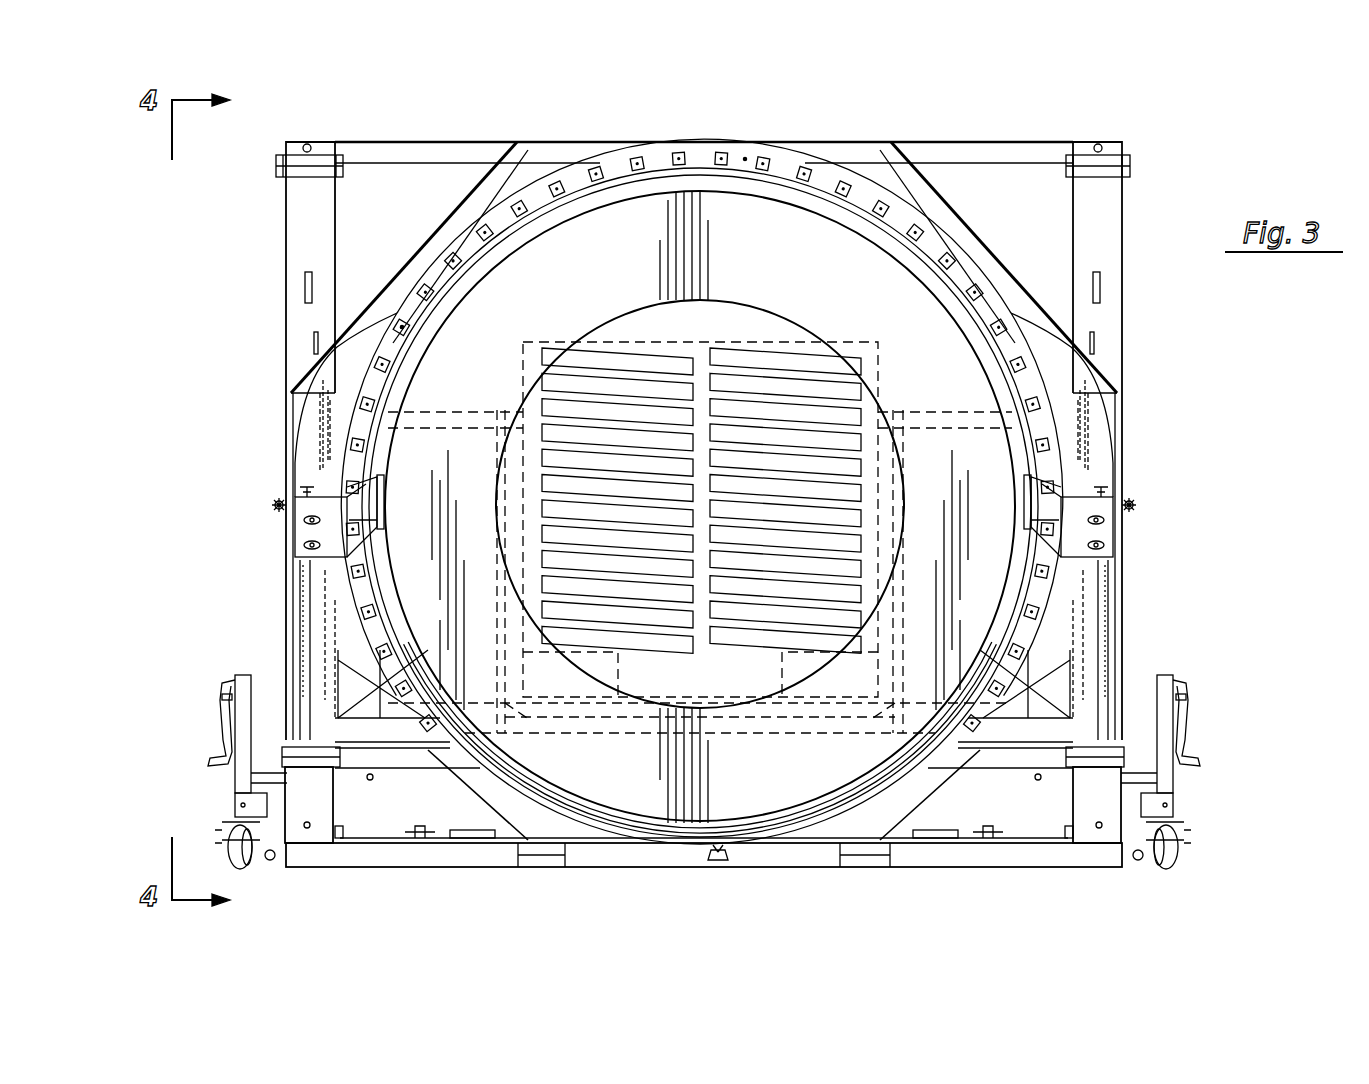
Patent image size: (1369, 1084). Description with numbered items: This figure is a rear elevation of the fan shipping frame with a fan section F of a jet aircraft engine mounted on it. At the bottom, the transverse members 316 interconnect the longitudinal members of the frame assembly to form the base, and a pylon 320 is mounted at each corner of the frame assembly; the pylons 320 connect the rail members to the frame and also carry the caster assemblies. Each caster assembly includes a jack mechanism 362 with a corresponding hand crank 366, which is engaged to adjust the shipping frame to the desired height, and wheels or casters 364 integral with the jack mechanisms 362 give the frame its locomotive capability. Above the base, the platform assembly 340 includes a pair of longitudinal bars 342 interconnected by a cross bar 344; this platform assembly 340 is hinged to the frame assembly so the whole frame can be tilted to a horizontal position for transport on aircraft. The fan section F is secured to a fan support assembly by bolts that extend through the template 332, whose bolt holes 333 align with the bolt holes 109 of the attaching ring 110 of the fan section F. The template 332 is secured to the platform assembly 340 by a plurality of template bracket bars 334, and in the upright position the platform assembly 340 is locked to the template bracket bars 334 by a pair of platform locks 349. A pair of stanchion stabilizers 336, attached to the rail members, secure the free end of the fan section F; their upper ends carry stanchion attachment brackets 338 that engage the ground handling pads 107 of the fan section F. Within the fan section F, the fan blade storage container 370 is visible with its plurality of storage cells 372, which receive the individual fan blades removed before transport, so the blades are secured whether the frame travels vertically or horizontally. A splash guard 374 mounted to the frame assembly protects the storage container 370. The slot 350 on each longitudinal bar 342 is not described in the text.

The ground handling pads 107 is at (375, 490).
The bolt holes 109 is at (700, 412).
The attaching ring 110 is at (760, 168).
The transverse members 316 is at (596, 855).
The pylon 320 is at (300, 158).
The template 332 is at (838, 175).
The bolt holes 333 is at (830, 180).
The template bracket bars 334 is at (580, 155).
The stanchion stabilizers 336 is at (315, 595).
The stanchion attachment brackets 338 is at (380, 505).
The platform assembly 340 is at (440, 130).
The longitudinal bars 342 is at (303, 353).
The cross bar 344 is at (487, 150).
The platform locks 349 is at (280, 505).
The slot 350 is at (305, 290).
The jack mechanism 362 is at (235, 765).
The casters 364 is at (245, 860).
The hand crank 366 is at (203, 748).
The fan blade storage container 370 is at (720, 694).
The storage cells 372 is at (690, 400).
The splash guard 374 is at (1008, 757).
The fan section F is at (655, 255).